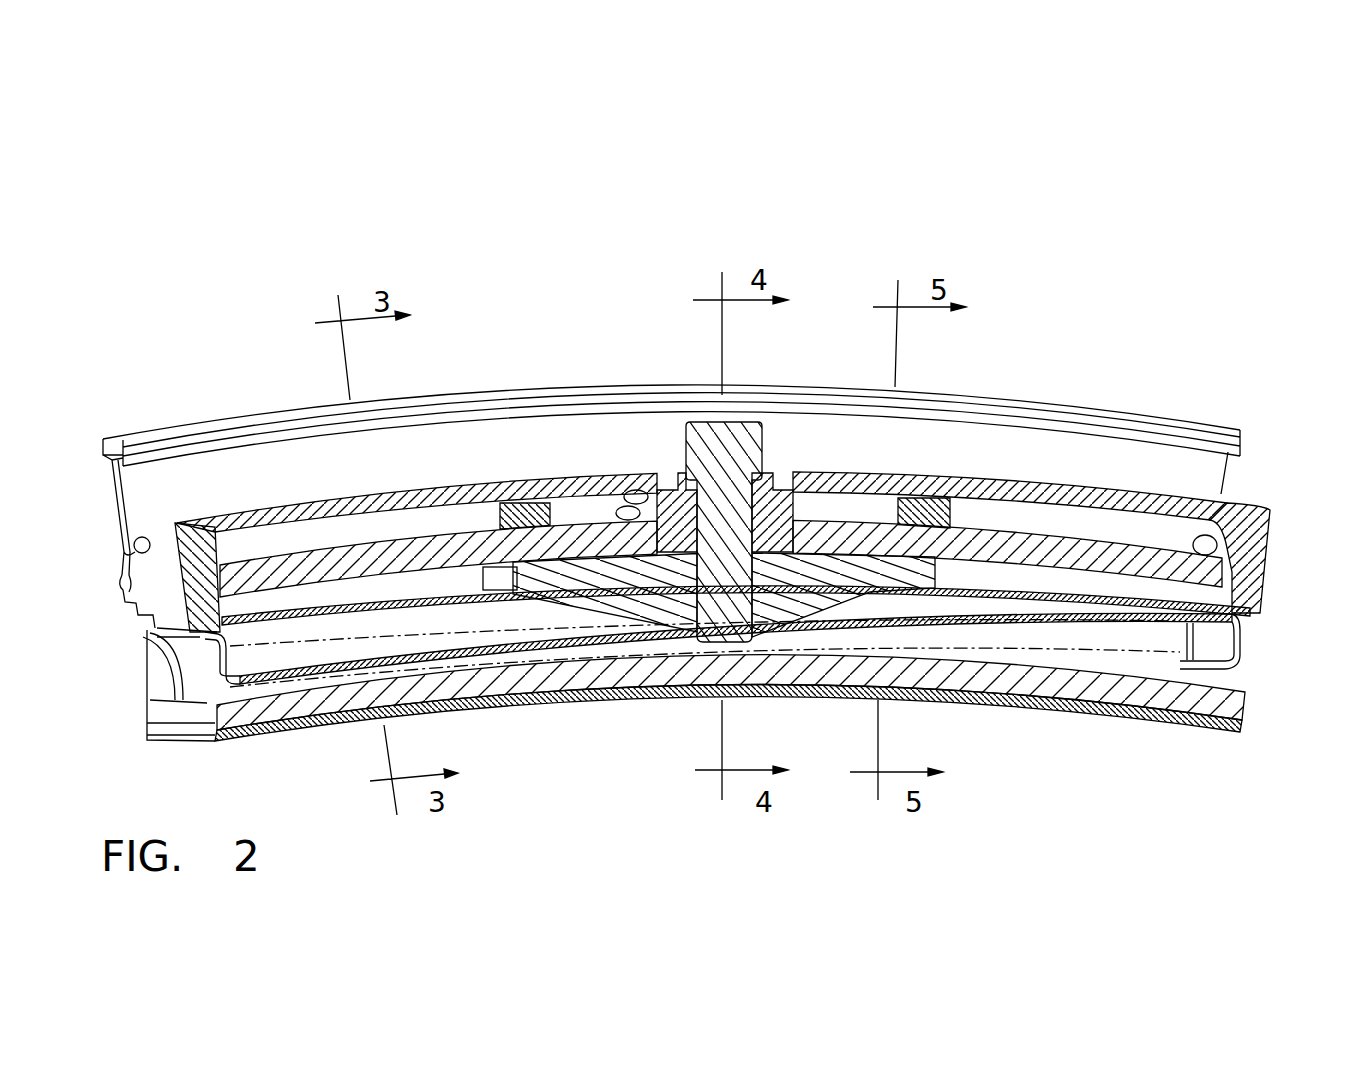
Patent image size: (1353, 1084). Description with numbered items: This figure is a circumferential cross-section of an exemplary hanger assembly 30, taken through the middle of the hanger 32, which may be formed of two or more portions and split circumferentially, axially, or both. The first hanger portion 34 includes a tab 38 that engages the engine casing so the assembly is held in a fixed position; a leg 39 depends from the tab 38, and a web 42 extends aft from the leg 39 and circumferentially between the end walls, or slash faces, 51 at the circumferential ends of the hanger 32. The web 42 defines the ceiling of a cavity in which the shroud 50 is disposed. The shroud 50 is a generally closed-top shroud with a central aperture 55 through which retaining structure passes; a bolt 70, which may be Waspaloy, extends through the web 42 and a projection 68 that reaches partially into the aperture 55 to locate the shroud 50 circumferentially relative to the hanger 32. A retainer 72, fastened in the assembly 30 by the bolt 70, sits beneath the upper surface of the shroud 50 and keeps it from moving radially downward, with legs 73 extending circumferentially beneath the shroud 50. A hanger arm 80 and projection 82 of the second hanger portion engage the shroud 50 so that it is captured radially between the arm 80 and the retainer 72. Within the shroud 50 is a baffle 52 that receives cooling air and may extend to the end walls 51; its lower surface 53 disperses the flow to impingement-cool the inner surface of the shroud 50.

The hanger assembly 30 is at (1107, 222).
The hanger 32 is at (847, 298).
The first hanger portion 34 is at (112, 493).
The tab 38 is at (300, 420).
The leg 39 is at (126, 552).
The web 42 is at (122, 598).
The shroud 50 is at (158, 750).
The end walls 51 is at (140, 615).
The baffle 52 is at (1244, 664).
The lower surface 53 is at (230, 680).
The central aperture 55 is at (773, 487).
The projection 68 is at (667, 490).
The bolt 70 is at (747, 437).
The retainer 72 is at (803, 595).
The legs 73 is at (628, 590).
The hanger arm 80 is at (523, 517).
The projection 82 is at (490, 517).